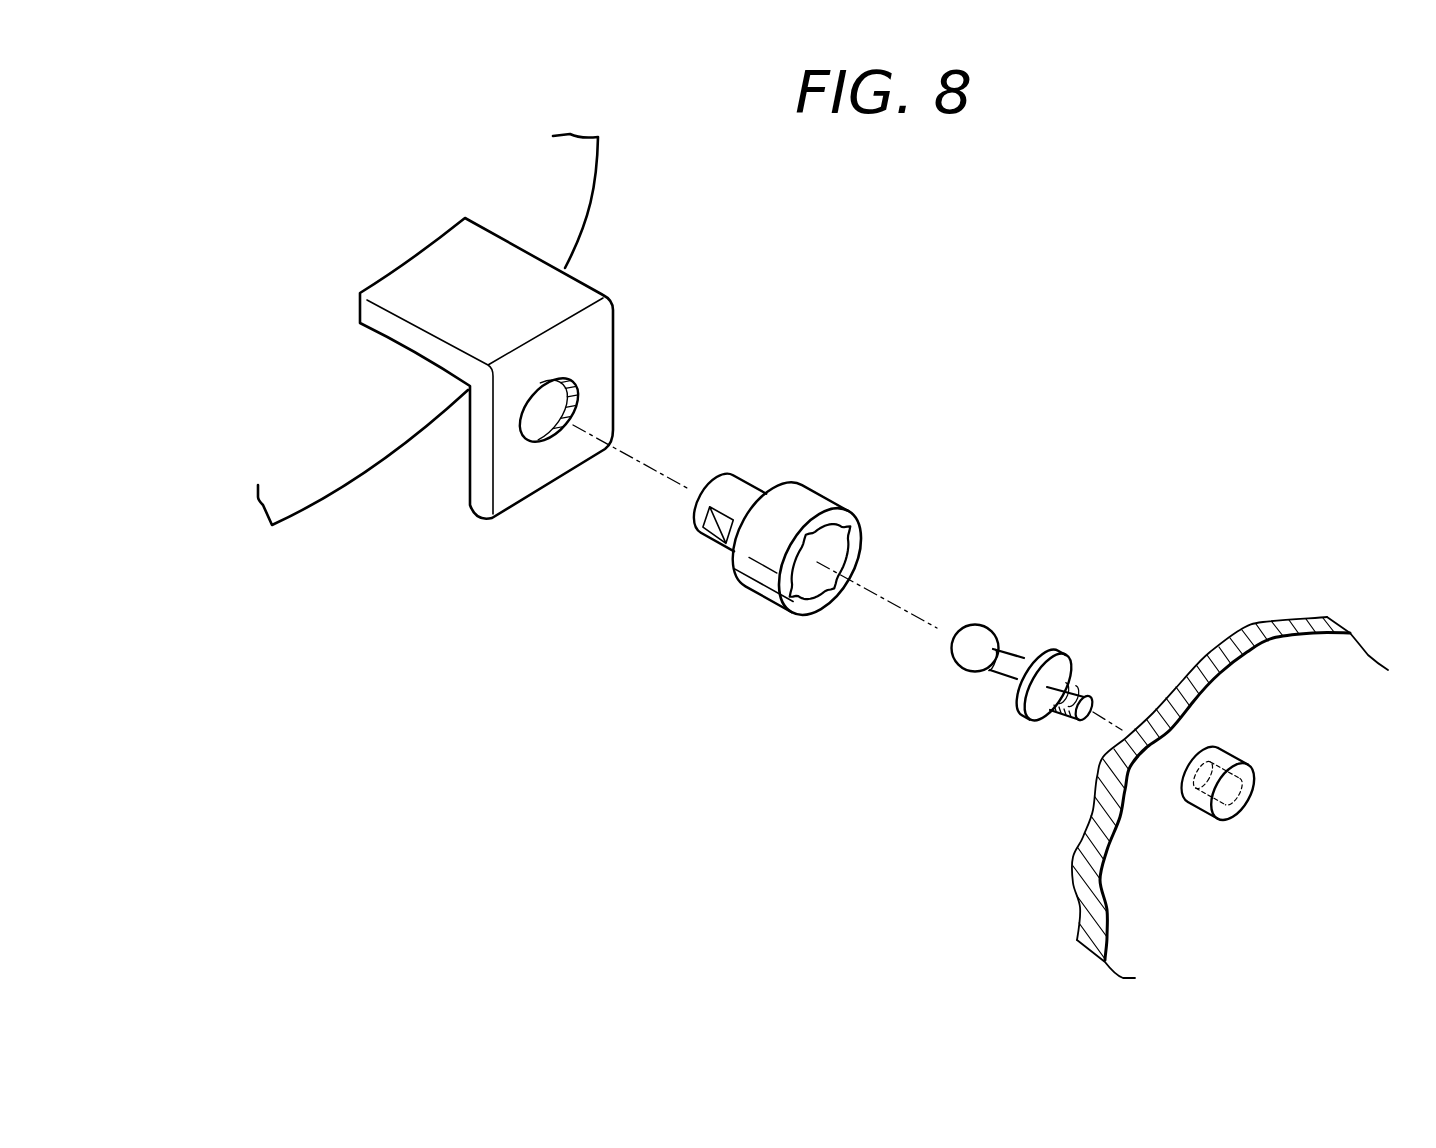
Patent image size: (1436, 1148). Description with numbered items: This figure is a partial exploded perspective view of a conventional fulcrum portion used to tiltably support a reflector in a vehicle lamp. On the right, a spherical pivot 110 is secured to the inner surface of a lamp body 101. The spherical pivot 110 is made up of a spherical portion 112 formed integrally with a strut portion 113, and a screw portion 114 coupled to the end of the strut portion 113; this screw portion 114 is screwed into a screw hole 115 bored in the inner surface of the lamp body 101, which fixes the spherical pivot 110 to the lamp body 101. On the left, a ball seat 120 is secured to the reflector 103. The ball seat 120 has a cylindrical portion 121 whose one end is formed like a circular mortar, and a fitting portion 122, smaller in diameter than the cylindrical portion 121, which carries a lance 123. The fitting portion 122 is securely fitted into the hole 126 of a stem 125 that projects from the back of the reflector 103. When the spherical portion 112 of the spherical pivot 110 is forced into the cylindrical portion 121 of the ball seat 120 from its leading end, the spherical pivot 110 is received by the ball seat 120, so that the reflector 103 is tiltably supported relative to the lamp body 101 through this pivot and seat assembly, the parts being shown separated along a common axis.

The lamp body 101 is at (1267, 620).
The reflector 103 is at (575, 224).
The spherical pivot 110 is at (1021, 679).
The spherical portion 112 is at (975, 648).
The strut portion 113 is at (1035, 684).
The screw portion 114 is at (1071, 703).
The screw hole 115 is at (1200, 795).
The ball seat 120 is at (775, 555).
The cylindrical portion 121 is at (748, 600).
The fitting portion 122 is at (746, 520).
The lance 123 is at (718, 525).
The stem 125 is at (602, 403).
The hole 126 is at (553, 443).